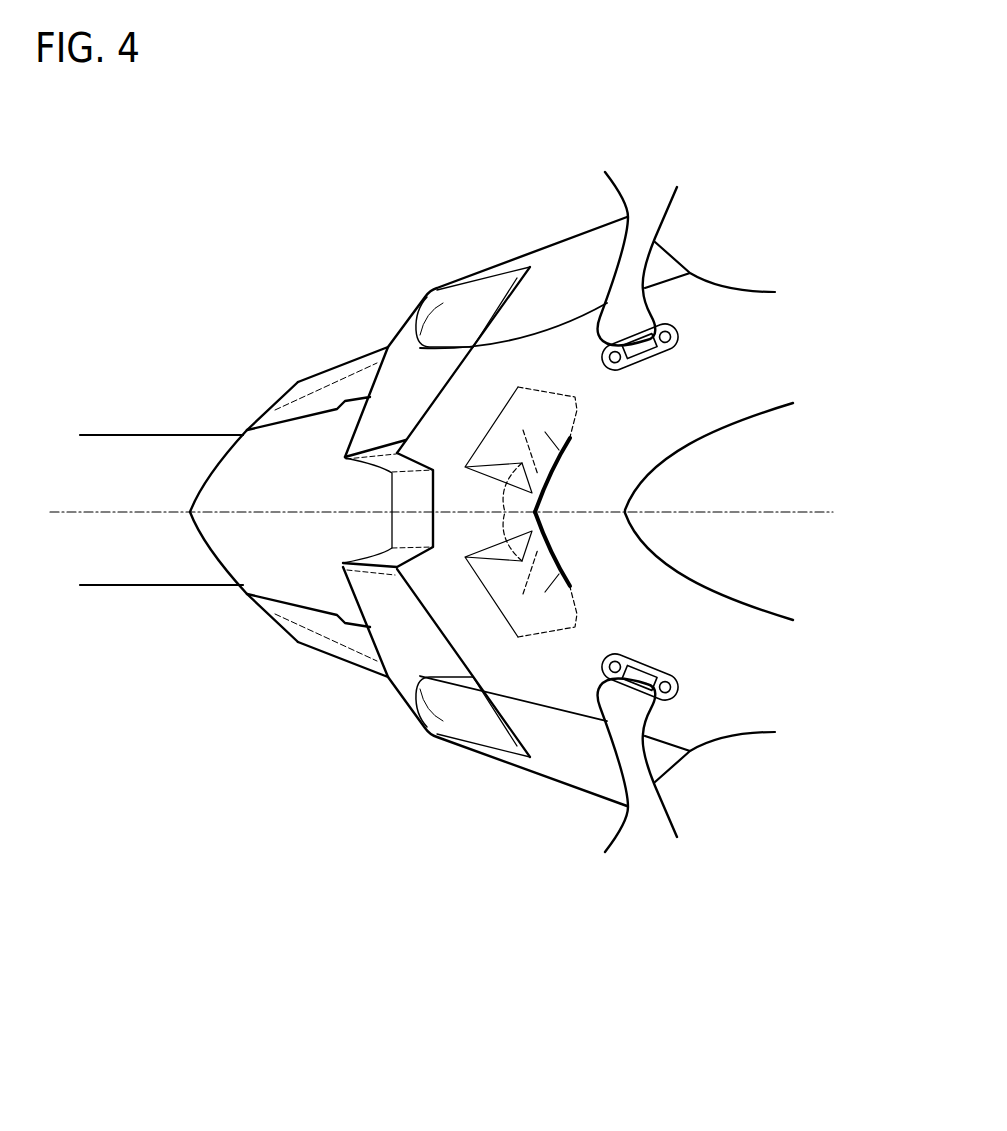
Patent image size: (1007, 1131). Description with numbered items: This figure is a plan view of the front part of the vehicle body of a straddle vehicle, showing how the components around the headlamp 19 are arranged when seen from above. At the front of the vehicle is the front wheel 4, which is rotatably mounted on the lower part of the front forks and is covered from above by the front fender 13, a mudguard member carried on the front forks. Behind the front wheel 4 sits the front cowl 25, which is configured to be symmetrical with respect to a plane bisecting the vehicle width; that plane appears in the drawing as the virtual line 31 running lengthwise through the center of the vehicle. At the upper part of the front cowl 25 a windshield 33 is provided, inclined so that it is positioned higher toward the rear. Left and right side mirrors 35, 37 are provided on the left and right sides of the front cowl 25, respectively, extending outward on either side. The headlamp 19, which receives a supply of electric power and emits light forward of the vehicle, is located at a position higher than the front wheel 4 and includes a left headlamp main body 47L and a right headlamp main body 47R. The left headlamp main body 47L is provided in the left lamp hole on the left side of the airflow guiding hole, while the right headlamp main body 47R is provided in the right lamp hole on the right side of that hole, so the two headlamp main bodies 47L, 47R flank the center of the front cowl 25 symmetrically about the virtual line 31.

The front wheel 4 is at (103, 578).
The front fender 13 is at (218, 478).
The headlamp 19 is at (433, 649).
The front cowl 25 is at (728, 297).
The virtual line 31 is at (793, 512).
The windshield 33 is at (760, 437).
The left side mirror 35 is at (663, 823).
The right side mirror 37 is at (653, 208).
The right headlamp main body 47R is at (455, 347).
The left headlamp main body 47L is at (452, 678).